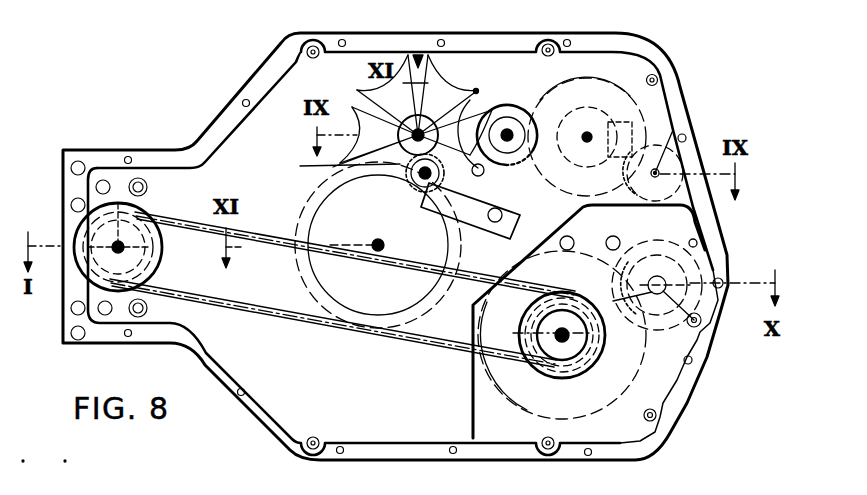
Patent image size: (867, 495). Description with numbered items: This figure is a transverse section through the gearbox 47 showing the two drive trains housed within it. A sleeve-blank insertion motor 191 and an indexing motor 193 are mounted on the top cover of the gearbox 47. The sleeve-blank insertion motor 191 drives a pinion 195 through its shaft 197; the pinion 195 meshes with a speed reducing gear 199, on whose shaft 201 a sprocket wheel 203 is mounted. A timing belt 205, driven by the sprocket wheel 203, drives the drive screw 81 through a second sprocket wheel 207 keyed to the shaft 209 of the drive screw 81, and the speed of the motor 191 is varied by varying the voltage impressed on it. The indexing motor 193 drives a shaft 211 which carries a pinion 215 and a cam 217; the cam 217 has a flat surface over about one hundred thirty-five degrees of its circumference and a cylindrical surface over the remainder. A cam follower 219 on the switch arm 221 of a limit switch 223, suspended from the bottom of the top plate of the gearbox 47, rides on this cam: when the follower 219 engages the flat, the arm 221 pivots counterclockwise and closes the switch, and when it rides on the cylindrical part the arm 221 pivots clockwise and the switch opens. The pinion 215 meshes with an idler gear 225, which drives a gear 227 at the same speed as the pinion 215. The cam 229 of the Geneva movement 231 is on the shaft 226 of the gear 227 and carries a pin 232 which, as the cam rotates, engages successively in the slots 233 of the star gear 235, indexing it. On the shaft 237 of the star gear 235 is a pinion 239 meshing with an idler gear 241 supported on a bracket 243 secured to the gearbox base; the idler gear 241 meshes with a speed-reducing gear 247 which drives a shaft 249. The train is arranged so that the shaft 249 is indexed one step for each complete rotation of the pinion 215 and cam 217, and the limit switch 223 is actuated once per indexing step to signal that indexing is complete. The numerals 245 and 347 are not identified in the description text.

The gearbox 47 is at (720, 221).
The drive screw 81 is at (121, 250).
The sleeve-blank insertion motor 191 is at (729, 253).
The indexing motor 193 is at (662, 168).
The pinion 195 is at (657, 292).
The shaft 197 is at (701, 325).
The speed reducing gear 199 is at (611, 386).
The shaft 201 is at (563, 340).
The sprocket wheel 203 is at (533, 397).
The timing belt 205 is at (288, 320).
The sprocket wheel 207 is at (150, 216).
The shaft 209 is at (118, 240).
The shaft 211 is at (657, 170).
The pinion 215 is at (625, 213).
The cam 217 is at (657, 271).
The cam follower 219 is at (612, 183).
The switch arm 221 is at (611, 163).
The limit switch 223 is at (622, 113).
The idler gear 225 is at (586, 82).
The shaft 226 is at (510, 110).
The gear 227 is at (510, 130).
The cam 229 is at (523, 86).
The Geneva movement 231 is at (418, 56).
The pin 232 is at (482, 170).
The slots 233 is at (477, 89).
The star gear 235 is at (358, 88).
The shaft 237 is at (420, 128).
The pinion 239 is at (316, 152).
The idler gear 241 is at (333, 166).
The bracket 243 is at (504, 238).
The housing wall 245 is at (280, 402).
The speed-reducing gear 247 is at (300, 215).
The shaft 249 is at (376, 238).
The lower housing portion 347 is at (680, 407).